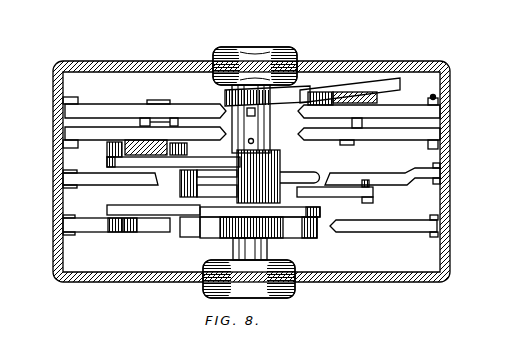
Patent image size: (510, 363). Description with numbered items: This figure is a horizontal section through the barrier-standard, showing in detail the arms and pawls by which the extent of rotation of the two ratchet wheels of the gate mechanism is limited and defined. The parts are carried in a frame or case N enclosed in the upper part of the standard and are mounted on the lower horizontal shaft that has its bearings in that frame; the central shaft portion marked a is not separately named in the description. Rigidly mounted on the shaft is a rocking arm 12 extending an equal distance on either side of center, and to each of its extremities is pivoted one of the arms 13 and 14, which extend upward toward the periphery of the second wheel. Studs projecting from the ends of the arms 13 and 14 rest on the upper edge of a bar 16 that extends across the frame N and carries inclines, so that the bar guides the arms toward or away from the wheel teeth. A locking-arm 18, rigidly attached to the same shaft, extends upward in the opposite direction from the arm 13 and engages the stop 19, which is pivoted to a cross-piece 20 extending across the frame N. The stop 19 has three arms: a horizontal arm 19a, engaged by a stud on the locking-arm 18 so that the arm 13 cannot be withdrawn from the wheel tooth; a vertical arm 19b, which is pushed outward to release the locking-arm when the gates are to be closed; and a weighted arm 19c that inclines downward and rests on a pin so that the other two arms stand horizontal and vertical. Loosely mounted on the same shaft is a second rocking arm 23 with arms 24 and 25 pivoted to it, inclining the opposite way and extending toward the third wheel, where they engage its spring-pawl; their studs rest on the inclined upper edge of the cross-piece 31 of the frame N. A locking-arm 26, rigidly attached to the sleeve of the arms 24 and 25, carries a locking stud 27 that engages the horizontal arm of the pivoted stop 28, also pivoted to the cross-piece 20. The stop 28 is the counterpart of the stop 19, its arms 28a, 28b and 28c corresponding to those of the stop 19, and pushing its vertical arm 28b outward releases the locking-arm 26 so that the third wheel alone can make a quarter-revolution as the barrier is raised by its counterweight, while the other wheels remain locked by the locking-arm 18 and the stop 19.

The frame or case N is at (165, 70).
The central spindle a is at (251, 172).
The rocking arm 12 is at (258, 227).
The arm 13 is at (153, 210).
The arm 14 is at (260, 212).
The bar 16 is at (250, 226).
The locking-arm 18 is at (267, 96).
The stop 19 is at (362, 123).
The horizontal arm of stop 19a is at (350, 90).
The vertical arm of stop 19b is at (349, 138).
The weighted arm of stop 19c is at (342, 98).
The cross-piece 20 is at (251, 122).
The rocking arm 23 is at (250, 176).
The arm 24 is at (335, 191).
The arm 25 is at (217, 191).
The locking-arm 26 is at (173, 162).
The locking stud 27 is at (107, 150).
The pivoted stop 28 is at (163, 96).
The hatched block 28a is at (152, 143).
The vertical arm of stop 28b is at (150, 118).
The knurled block 28c is at (178, 149).
The cross-piece 31 is at (251, 175).